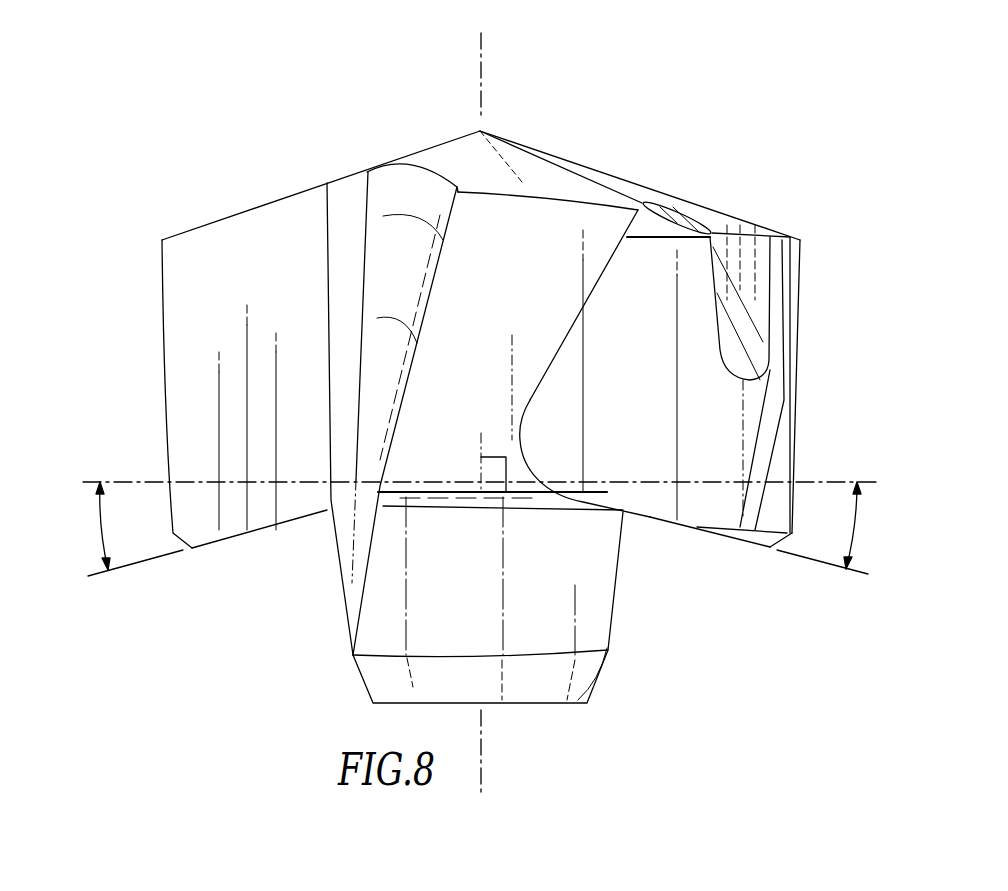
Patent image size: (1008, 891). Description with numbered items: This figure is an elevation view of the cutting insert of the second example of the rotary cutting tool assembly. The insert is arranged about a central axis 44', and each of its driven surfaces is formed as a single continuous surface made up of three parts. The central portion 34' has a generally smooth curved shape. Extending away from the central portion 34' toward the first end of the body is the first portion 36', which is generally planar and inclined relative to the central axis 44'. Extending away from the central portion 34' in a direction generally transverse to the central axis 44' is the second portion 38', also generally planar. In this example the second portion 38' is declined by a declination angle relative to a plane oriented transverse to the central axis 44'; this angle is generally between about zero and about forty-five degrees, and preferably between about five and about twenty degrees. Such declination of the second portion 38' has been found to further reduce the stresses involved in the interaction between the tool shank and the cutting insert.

The central axis 44' is at (515, 414).
The first portion 36' is at (576, 305).
The central portion 34' is at (555, 434).
The second portion 38' is at (481, 556).